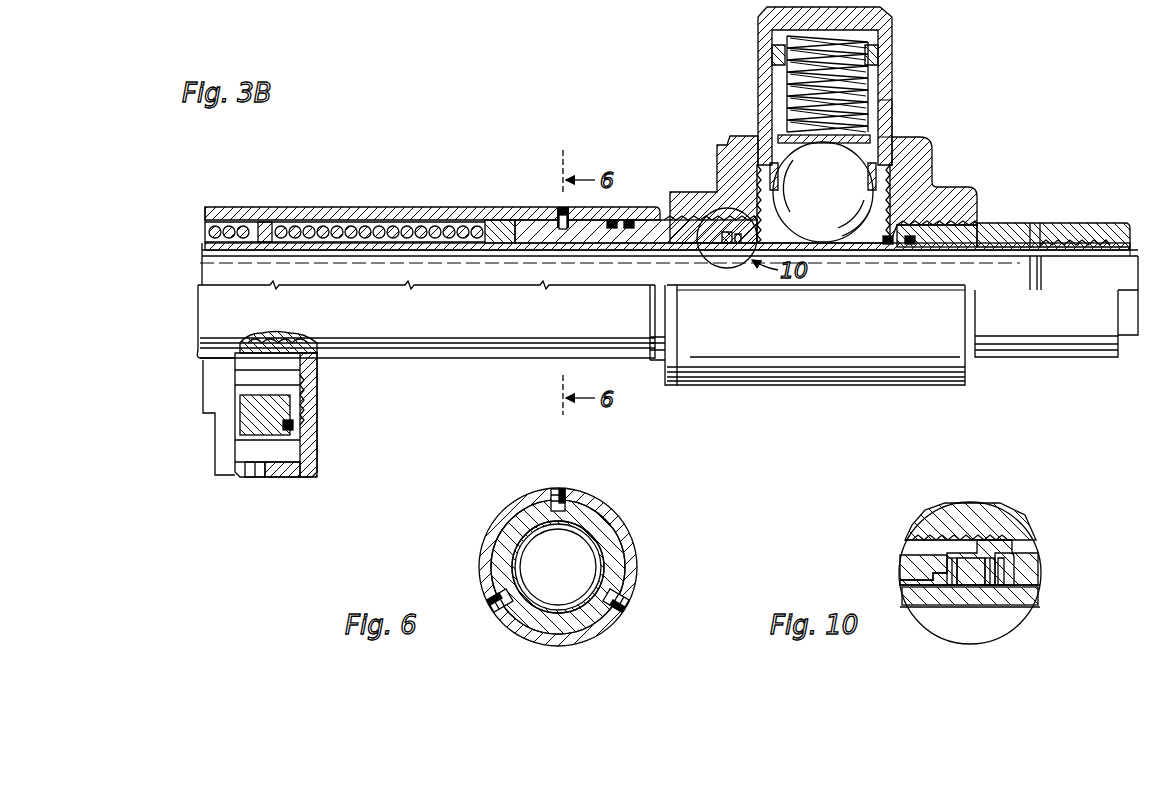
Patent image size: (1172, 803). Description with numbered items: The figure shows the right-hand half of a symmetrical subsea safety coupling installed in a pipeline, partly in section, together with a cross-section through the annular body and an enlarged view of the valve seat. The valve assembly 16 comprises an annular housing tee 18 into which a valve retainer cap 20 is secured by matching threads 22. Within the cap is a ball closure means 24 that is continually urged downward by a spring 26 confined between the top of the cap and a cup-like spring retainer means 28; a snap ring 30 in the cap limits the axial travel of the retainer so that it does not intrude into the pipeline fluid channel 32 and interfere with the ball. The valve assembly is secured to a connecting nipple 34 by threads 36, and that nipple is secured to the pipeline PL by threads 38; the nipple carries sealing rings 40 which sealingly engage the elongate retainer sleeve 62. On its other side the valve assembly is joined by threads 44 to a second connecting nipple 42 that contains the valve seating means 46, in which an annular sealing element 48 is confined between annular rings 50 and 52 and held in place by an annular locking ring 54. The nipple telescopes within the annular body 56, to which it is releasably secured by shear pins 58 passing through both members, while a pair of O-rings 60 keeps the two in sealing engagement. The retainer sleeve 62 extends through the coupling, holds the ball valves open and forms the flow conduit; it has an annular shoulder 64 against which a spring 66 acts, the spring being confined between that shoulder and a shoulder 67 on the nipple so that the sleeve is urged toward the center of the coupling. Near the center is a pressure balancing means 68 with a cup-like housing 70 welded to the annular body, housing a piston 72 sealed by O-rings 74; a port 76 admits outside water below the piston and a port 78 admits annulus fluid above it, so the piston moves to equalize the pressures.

In FIG. 3B, the annular body 56 is at (215, 207).
In FIG. 6, the annular body 56 is at (598, 503).
In FIG. 3B, the shear pins 58 is at (562, 207).
In FIG. 6, the shear pins 58 is at (558, 490).
In FIG. 3B, the O-rings 60 is at (630, 220).
In FIG. 3B, the retainer sleeve 62 is at (440, 250).
In FIG. 6, the retainer sleeve 62 is at (594, 546).
In FIG. 10, the retainer sleeve 62 is at (1030, 598).
In FIG. 3B, the annular shoulder 64 is at (266, 222).
In FIG. 3B, the spring 66 is at (325, 226).
In FIG. 3B, the shoulder 67 is at (497, 220).
In FIG. 3B, the second connecting nipple 42 is at (540, 225).
In FIG. 10, the second connecting nipple 42 is at (905, 555).
In FIG. 3B, the threads 44 is at (692, 222).
In FIG. 10, the threads 44 is at (940, 538).
In FIG. 3B, the valve seating means 46 is at (712, 258).
In FIG. 10, the valve seating means 46 is at (903, 528).
In FIG. 10, the annular sealing element 48 is at (975, 588).
In FIG. 10, the annular ring 50 is at (950, 588).
In FIG. 10, the annular ring 52 is at (990, 588).
In FIG. 10, the annular locking ring 54 is at (1015, 575).
In FIG. 3B, the valve assembly 16 is at (896, 18).
In FIG. 3B, the annular housing tee 18 is at (935, 160).
In FIG. 10, the annular housing tee 18 is at (980, 508).
In FIG. 3B, the valve retainer cap 20 is at (886, 60).
In FIG. 3B, the threads 22 is at (902, 138).
In FIG. 3B, the ball closure means 24 is at (840, 193).
In FIG. 3B, the spring 26 is at (780, 42).
In FIG. 3B, the spring retainer means 28 is at (778, 58).
In FIG. 3B, the snap ring 30 is at (778, 172).
In FIG. 3B, the pipeline fluid channel 32 is at (850, 275).
In FIG. 3B, the connecting nipple 34 is at (1012, 223).
In FIG. 3B, the threads 36 is at (965, 226).
In FIG. 3B, the threads 38 is at (1068, 243).
In FIG. 3B, the sealing rings 40 is at (912, 248).
In FIG. 3B, the pipeline PL is at (1128, 226).
In FIG. 3B, the pressure balancing means 68 is at (320, 465).
In FIG. 3B, the cup-like housing 70 is at (290, 478).
In FIG. 3B, the piston 72 is at (300, 405).
In FIG. 3B, the O-rings 74 is at (305, 425).
In FIG. 3B, the port 76 is at (258, 478).
In FIG. 3B, the port 78 is at (255, 345).